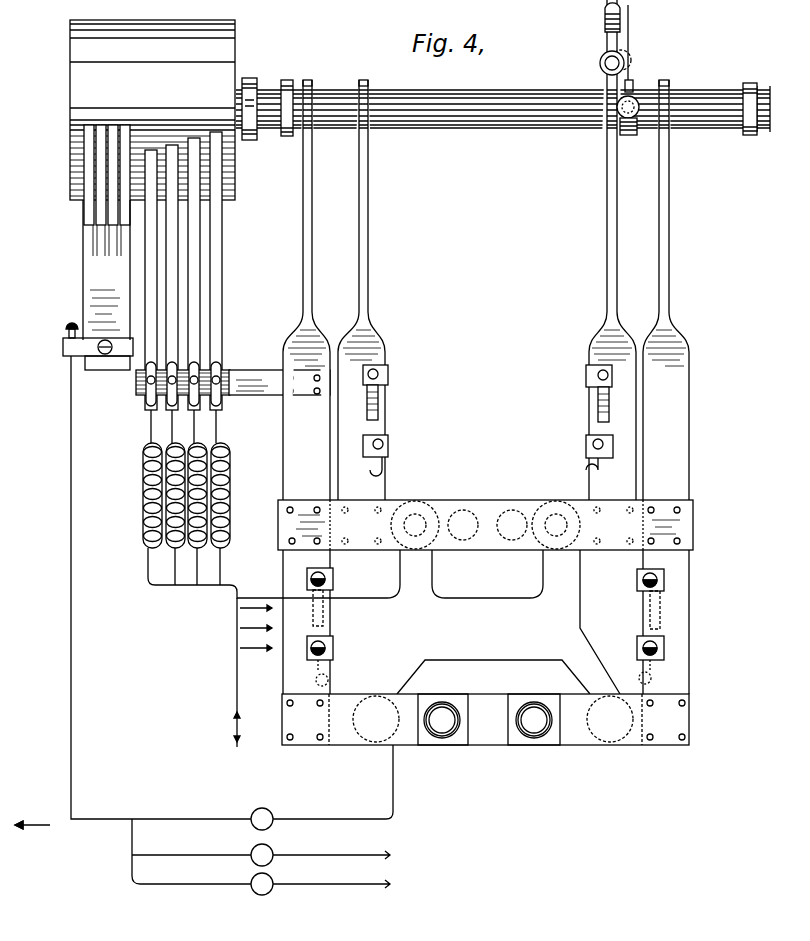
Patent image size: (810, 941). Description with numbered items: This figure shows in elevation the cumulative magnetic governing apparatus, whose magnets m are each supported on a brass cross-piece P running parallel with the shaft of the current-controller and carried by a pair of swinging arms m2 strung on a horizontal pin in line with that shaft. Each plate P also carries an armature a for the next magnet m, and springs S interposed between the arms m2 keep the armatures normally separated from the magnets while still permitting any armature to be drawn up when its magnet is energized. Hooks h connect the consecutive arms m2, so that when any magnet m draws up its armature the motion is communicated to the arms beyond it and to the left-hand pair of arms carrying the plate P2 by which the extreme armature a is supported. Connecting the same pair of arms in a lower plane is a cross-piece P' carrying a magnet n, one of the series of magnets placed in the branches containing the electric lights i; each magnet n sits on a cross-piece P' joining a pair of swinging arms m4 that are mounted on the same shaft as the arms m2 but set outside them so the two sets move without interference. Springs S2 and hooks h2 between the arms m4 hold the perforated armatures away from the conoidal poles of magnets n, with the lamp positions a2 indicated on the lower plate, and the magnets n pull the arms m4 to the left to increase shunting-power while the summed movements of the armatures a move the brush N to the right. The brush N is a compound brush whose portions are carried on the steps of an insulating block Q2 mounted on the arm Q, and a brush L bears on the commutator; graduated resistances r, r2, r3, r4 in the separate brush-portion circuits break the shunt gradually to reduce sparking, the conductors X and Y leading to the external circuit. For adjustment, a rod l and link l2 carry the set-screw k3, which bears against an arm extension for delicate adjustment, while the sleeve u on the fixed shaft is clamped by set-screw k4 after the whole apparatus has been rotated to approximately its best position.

The brush L is at (149, 195).
The brush N is at (194, 271).
The arm Q is at (279, 382).
The stepped block of insulating material Q2 is at (232, 372).
The swinging arms m2 is at (487, 250).
The swinging arms m4 is at (302, 304).
The rod l is at (631, 14).
The link l2 is at (622, 52).
The adjusting set-screw k3 is at (600, 58).
The set-screw k4 is at (636, 100).
The sleeve u is at (628, 137).
The springs S is at (487, 393).
The hooks h is at (488, 455).
The spring clip S2 is at (485, 598).
The hook h2 is at (485, 661).
The plate P2 is at (693, 530).
The magnets m is at (485, 516).
The armature a is at (465, 512).
The cross-piece P is at (451, 622).
The cross-piece P' is at (485, 702).
The magnets n is at (493, 708).
The lamp socket a2 is at (489, 728).
The artificial resistance r is at (137, 479).
The artificial resistance r2 is at (170, 486).
The artificial resistance r3 is at (194, 486).
The artificial resistance r4 is at (226, 479).
The conductor X is at (235, 677).
The conductor Y is at (133, 592).
The electric lights i is at (262, 820).